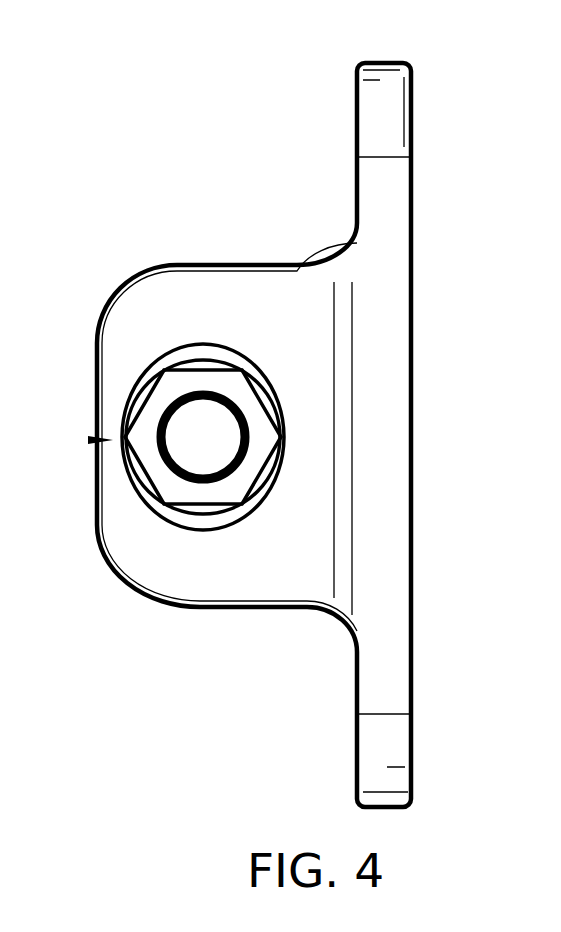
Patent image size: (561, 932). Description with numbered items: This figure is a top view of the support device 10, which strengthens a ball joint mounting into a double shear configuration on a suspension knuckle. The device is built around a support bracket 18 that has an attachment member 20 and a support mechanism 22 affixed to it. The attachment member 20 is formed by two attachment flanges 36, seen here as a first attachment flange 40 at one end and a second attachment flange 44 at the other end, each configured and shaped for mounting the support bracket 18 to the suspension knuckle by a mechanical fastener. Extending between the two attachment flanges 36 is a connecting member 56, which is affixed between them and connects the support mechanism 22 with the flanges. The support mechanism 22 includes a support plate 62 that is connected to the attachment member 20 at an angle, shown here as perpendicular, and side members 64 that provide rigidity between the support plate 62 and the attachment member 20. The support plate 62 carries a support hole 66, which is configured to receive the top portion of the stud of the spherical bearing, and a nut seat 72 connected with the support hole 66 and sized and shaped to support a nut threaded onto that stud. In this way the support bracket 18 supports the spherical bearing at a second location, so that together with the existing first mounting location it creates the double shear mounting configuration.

The support device 10 is at (130, 48).
The support bracket 18 is at (410, 338).
The attachment member 20 is at (455, 120).
The attachment flange 36 is at (465, 703).
The support mechanism 22 is at (92, 215).
The first attachment flange 40 is at (357, 108).
The second attachment flange 44 is at (357, 735).
The connecting member 56 is at (410, 452).
The support plate 62 is at (150, 553).
The side members 64 is at (213, 263).
The support hole 66 is at (176, 400).
The nut seat 72 is at (88, 440).